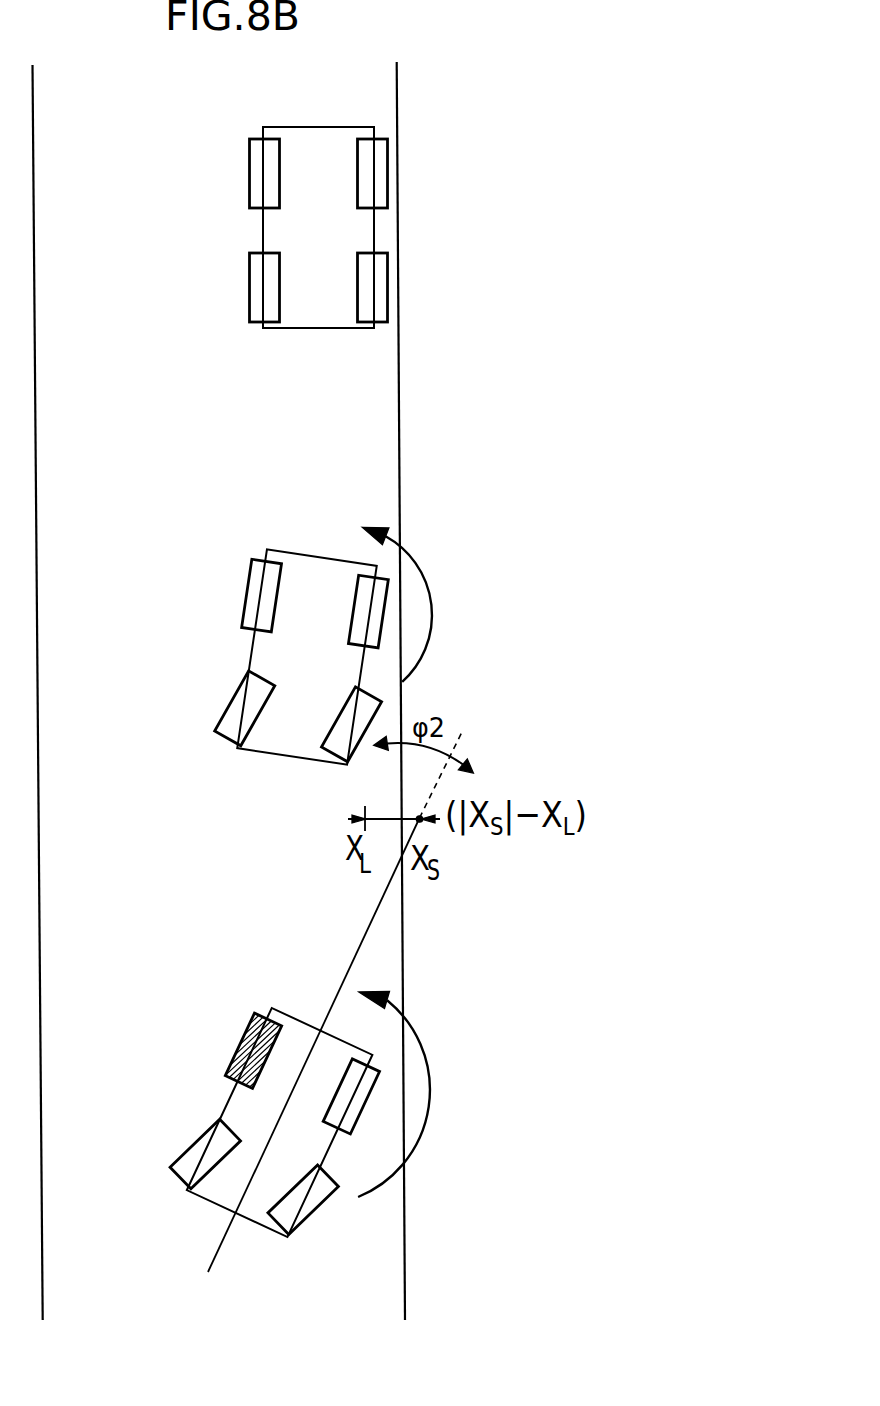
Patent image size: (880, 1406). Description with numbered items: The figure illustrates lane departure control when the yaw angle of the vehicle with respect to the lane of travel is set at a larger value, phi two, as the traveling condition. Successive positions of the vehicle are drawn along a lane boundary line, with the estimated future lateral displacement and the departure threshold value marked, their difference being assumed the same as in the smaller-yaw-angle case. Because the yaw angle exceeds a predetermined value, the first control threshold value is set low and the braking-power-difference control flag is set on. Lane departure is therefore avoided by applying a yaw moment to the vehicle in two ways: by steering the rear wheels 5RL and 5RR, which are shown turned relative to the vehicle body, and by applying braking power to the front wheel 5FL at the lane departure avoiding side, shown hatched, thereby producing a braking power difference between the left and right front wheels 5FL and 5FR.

The front left wheel 5FL is at (255, 174).
The front right wheel 5FR is at (383, 162).
The rear left wheel 5RL is at (255, 292).
The rear right wheel 5RR is at (383, 278).